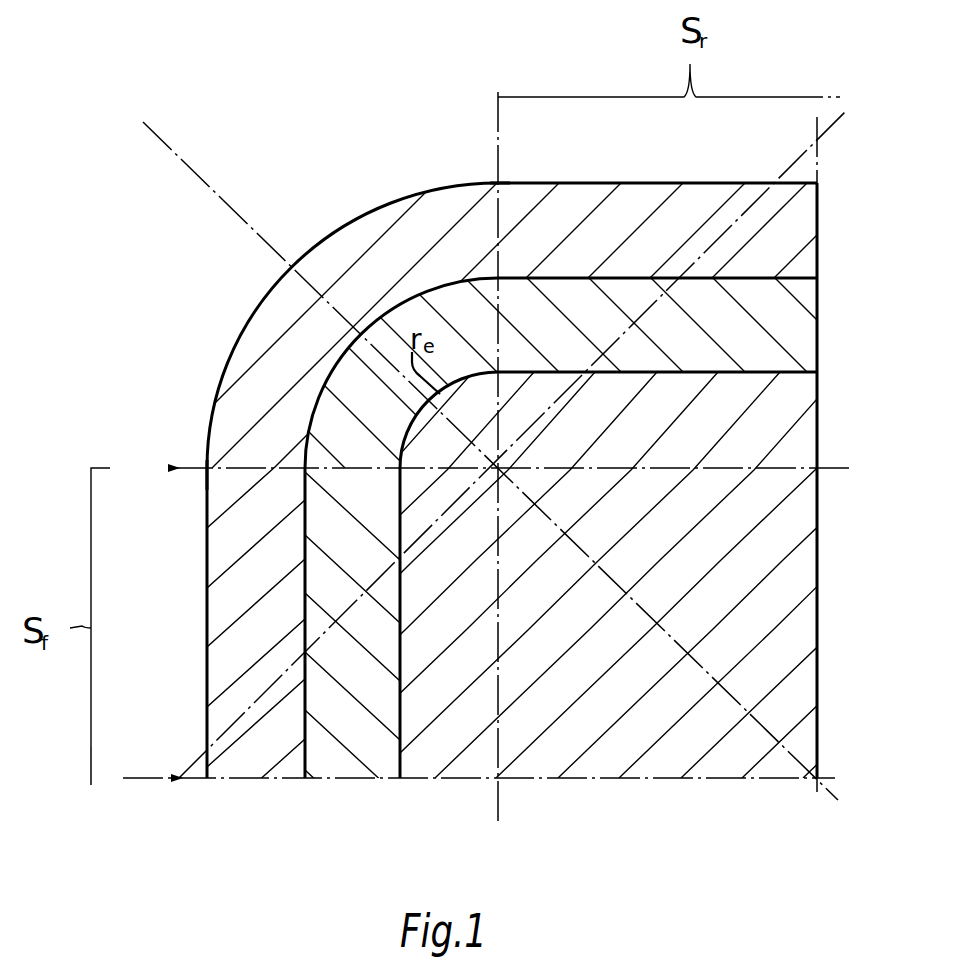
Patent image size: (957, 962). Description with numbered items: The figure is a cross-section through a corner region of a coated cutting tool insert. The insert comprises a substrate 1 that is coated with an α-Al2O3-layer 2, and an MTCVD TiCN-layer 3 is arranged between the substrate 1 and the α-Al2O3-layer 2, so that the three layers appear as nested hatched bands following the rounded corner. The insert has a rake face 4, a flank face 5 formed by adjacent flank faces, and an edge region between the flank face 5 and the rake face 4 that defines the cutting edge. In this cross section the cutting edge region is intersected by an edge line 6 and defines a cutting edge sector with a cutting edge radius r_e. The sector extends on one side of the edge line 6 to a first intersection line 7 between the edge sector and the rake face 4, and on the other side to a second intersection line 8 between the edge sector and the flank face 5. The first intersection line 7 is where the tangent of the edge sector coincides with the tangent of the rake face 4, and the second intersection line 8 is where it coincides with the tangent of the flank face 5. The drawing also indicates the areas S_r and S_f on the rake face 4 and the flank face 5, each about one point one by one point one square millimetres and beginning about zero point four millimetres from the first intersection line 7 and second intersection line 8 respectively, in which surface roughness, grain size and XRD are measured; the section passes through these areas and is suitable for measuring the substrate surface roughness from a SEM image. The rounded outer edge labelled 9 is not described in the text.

The substrate 1 is at (793, 431).
The α-Al2O3-layer 2 is at (797, 243).
The MTCVD TiCN-layer 3 is at (797, 313).
The rake face 4 is at (580, 183).
The flank face 5 is at (207, 628).
The edge line 6 is at (252, 231).
The first intersection line 7 is at (500, 182).
The second intersection line 8 is at (207, 470).
The rounded edge 9 is at (388, 200).